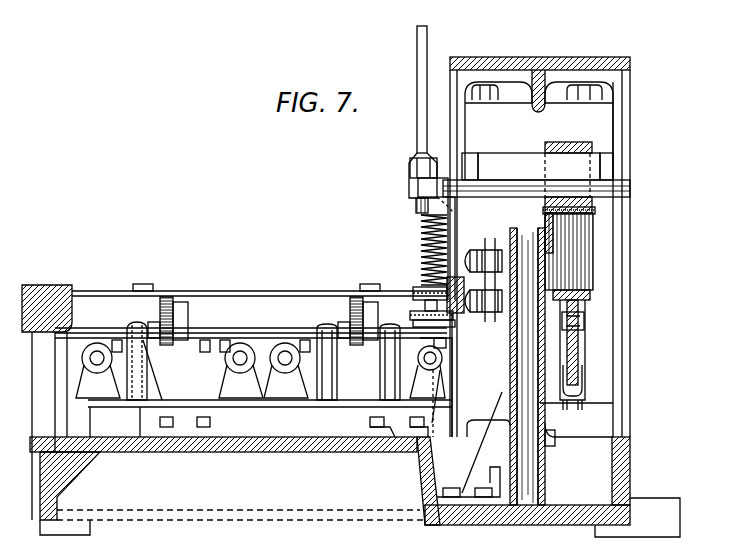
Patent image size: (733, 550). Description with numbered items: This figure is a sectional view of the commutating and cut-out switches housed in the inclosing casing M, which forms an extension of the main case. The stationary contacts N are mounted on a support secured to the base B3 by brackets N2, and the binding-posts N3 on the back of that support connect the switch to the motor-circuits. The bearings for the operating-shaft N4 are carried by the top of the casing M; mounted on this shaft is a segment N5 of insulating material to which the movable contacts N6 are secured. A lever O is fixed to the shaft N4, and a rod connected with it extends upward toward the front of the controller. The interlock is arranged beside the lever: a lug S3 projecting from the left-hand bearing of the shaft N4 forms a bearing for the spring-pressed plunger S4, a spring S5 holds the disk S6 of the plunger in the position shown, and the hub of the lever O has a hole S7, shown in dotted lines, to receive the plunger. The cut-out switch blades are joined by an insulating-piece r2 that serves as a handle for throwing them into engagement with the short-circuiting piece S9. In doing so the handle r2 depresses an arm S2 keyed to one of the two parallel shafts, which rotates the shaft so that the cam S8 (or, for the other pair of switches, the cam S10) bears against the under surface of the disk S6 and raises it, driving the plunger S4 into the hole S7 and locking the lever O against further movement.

The inclosing casing M is at (600, 58).
The operating-shaft N4 is at (513, 160).
The lever O is at (412, 182).
The lug S3 is at (415, 212).
The spring-pressed plunger S4 is at (421, 240).
The spring S5 is at (420, 268).
The disk S6 is at (422, 312).
The hole S7 is at (456, 212).
The binding-posts N3 is at (488, 246).
The segment N5 is at (575, 255).
The contacts N6 is at (580, 348).
The stationary contacts N is at (578, 368).
The brackets N2 is at (490, 458).
The base B3 is at (335, 455).
The insulating-piece r2 is at (183, 305).
The arms S2 is at (160, 310).
The short-circuiting piece S9 is at (181, 400).
The cam S8 is at (440, 380).
The cam S10 is at (440, 340).